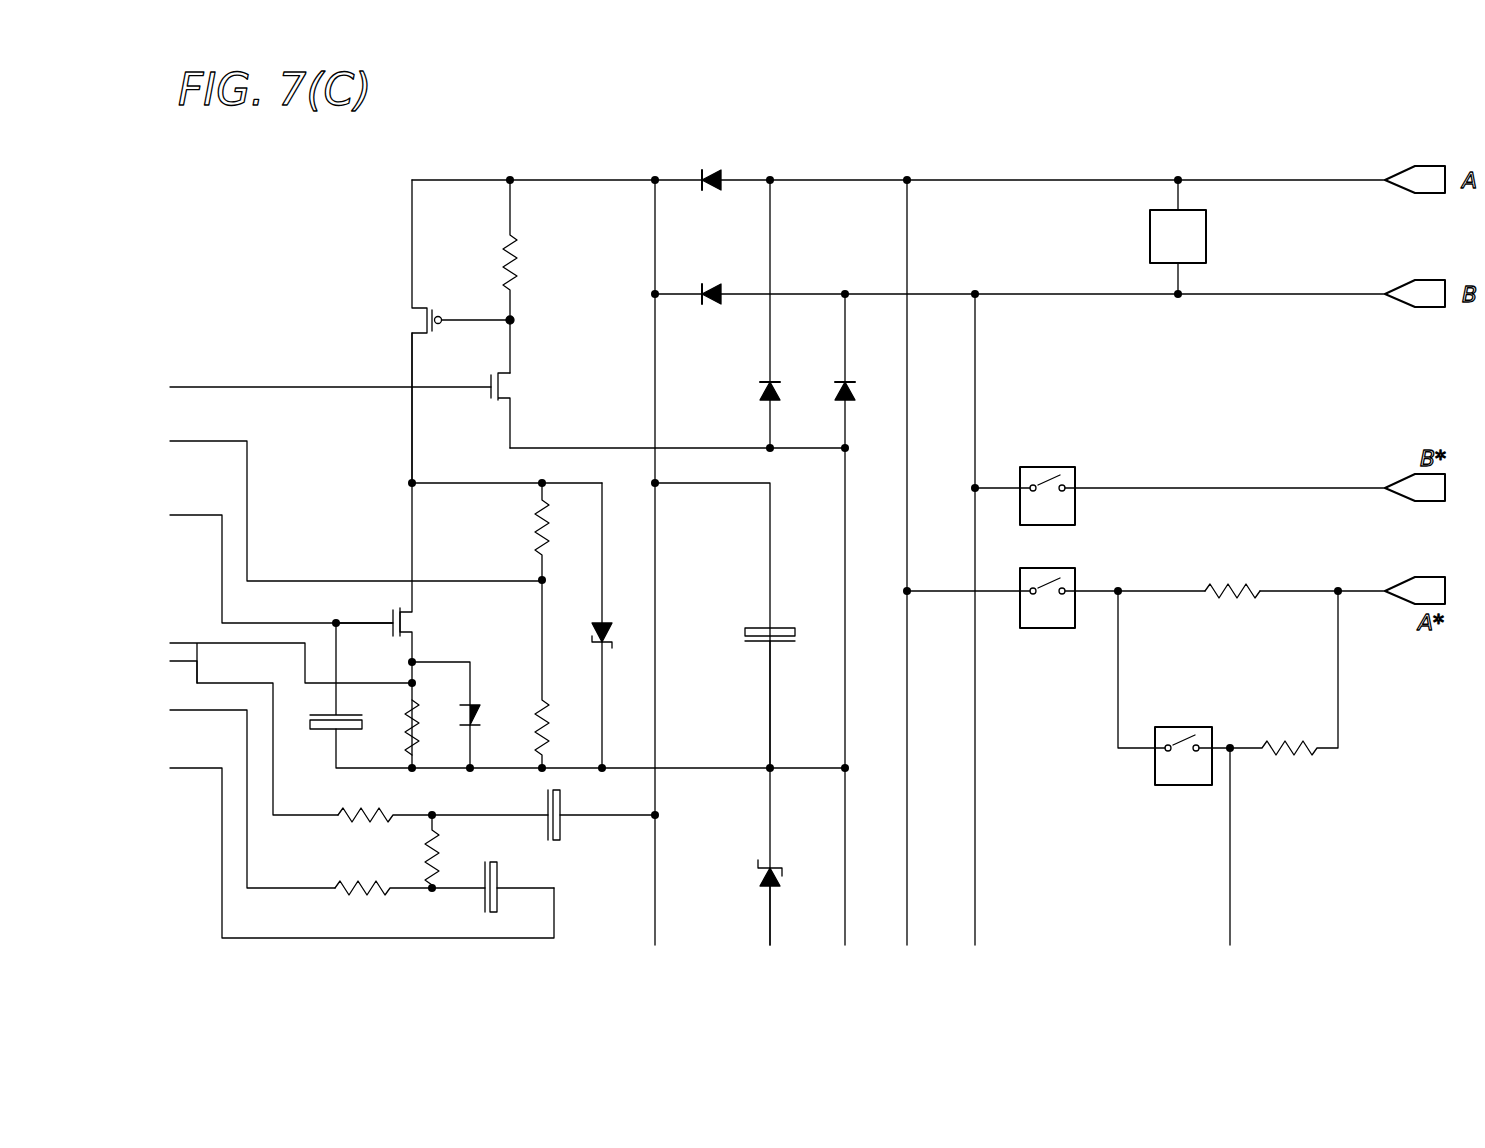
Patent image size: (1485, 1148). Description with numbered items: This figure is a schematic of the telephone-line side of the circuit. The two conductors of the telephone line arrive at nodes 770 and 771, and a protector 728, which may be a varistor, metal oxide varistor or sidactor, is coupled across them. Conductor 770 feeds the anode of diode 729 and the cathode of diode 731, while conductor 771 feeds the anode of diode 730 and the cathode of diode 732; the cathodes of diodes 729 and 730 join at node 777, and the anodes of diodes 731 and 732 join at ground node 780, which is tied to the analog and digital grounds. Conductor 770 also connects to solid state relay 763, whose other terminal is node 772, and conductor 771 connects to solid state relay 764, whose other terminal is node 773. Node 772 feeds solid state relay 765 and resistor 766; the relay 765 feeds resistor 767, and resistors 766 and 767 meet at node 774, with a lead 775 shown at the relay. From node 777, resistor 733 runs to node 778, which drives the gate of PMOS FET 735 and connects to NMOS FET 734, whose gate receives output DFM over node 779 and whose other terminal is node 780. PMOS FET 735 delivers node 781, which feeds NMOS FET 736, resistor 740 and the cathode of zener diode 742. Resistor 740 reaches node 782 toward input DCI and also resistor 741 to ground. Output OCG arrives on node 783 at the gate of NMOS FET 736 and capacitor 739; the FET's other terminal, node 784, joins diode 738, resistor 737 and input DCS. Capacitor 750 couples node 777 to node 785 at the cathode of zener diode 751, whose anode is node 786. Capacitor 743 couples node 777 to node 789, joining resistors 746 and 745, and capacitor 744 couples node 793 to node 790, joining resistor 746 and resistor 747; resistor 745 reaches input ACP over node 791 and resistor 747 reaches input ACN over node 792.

The protector 728 is at (1150, 236).
The diode 729 is at (735, 156).
The diode 730 is at (714, 304).
The diode 731 is at (761, 399).
The diode 732 is at (844, 390).
The resistor 733 is at (518, 262).
The NMOS FET 734 is at (494, 404).
The PMOS FET 735 is at (412, 330).
The NMOS FET 736 is at (414, 638).
The resistor 737 is at (418, 746).
The diode 738 is at (472, 706).
The capacitor 739 is at (325, 729).
The resistor 740 is at (538, 540).
The resistor 741 is at (544, 722).
The zener diode 742 is at (604, 620).
The capacitor 743 is at (562, 834).
The capacitor 744 is at (496, 878).
The resistor 745 is at (350, 816).
The resistor 746 is at (430, 860).
The resistor 747 is at (352, 890).
The capacitor 750 is at (778, 628).
The zener diode 751 is at (774, 862).
The solid state relay 763 is at (1050, 629).
The solid state relay 764 is at (1046, 466).
The solid state relay 765 is at (1173, 785).
The resistor 766 is at (1230, 584).
The resistor 767 is at (1284, 744).
The telephone line conductor 770 is at (981, 180).
The telephone line conductor 771 is at (1110, 300).
The node 772 is at (1138, 591).
The node 773 is at (1172, 488).
The node 774 is at (1372, 594).
The line 775 is at (1229, 907).
The node 777 is at (579, 178).
The node 778 is at (512, 340).
The node 779 is at (210, 387).
The node 780 is at (540, 448).
The node 781 is at (412, 420).
The node 782 is at (285, 580).
The node 783 is at (202, 515).
The node 784 is at (436, 668).
The node 785 is at (768, 717).
The node 786 is at (768, 922).
The node 789 is at (458, 818).
The node 790 is at (452, 890).
The node 791 is at (284, 818).
The node 792 is at (257, 890).
The node 793 is at (554, 912).